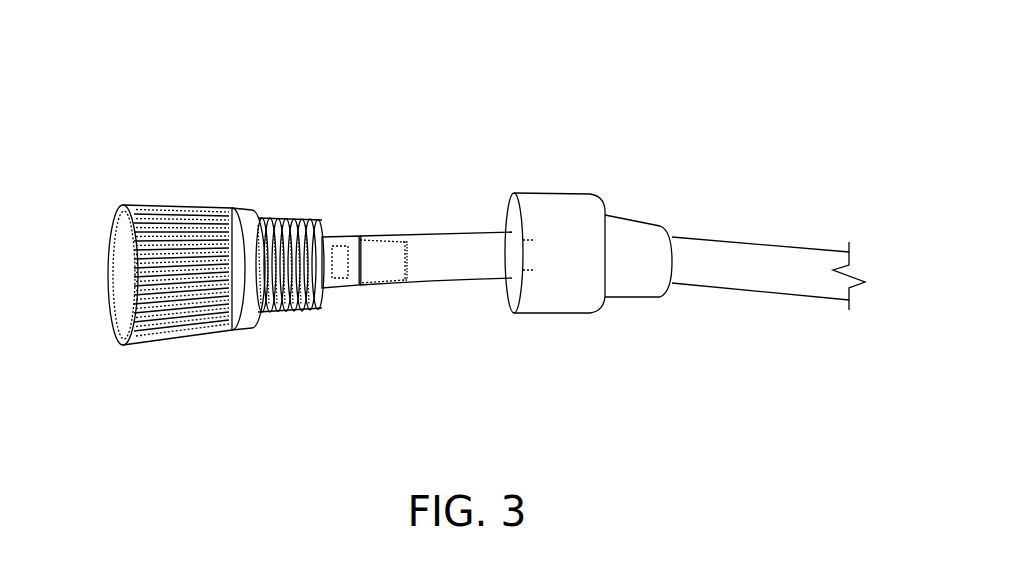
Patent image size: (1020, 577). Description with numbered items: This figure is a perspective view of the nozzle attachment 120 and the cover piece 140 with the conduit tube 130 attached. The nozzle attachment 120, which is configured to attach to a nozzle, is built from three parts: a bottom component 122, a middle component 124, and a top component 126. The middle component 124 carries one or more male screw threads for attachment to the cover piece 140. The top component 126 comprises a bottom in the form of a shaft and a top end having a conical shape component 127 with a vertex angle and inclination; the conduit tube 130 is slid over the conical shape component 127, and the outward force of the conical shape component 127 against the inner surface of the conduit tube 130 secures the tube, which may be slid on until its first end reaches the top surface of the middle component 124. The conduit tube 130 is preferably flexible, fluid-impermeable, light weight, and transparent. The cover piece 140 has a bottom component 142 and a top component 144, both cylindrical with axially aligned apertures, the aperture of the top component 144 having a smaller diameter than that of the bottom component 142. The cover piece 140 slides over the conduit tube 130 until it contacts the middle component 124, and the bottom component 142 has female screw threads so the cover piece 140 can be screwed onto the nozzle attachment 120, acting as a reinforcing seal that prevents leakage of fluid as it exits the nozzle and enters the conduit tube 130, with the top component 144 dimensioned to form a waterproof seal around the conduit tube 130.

The nozzle attachment 120 is at (195, 157).
The bottom component 122 is at (210, 343).
The middle component 124 is at (310, 320).
The top component 126 is at (367, 295).
The conical shape component 127 is at (385, 235).
The conduit tube 130 is at (470, 225).
The cover piece 140 is at (580, 118).
The bottom component 142 is at (572, 330).
The top component 144 is at (651, 306).